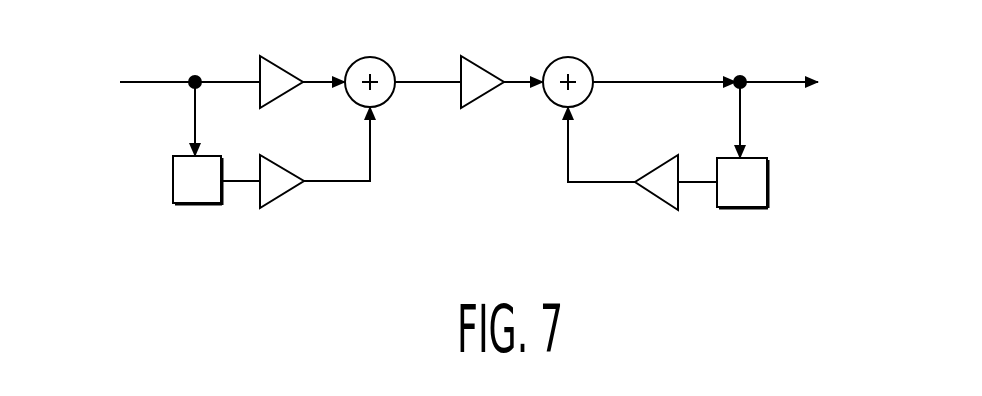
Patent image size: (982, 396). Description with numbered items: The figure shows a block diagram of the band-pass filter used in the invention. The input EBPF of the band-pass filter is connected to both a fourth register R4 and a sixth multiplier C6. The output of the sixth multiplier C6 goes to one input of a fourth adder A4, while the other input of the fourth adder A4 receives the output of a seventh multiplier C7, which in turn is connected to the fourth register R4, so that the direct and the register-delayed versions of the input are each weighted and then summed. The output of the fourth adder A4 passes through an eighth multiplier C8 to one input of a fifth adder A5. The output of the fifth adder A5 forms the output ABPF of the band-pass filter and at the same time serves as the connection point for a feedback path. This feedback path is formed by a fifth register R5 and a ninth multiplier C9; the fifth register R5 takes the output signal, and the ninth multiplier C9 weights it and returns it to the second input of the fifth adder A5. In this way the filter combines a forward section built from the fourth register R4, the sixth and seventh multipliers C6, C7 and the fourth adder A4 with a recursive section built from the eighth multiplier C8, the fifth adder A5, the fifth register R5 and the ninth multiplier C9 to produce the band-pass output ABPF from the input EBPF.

The input of the band-pass filter EBPF is at (160, 81).
The output of the band-pass filter ABPF is at (805, 81).
The sixth multiplier C6 is at (302, 63).
The seventh multiplier C7 is at (315, 175).
The eighth multiplier C8 is at (502, 63).
The ninth multiplier C9 is at (623, 176).
The fourth adder A4 is at (403, 62).
The fifth adder A5 is at (639, 62).
The fourth register R4 is at (216, 143).
The fifth register R5 is at (723, 145).